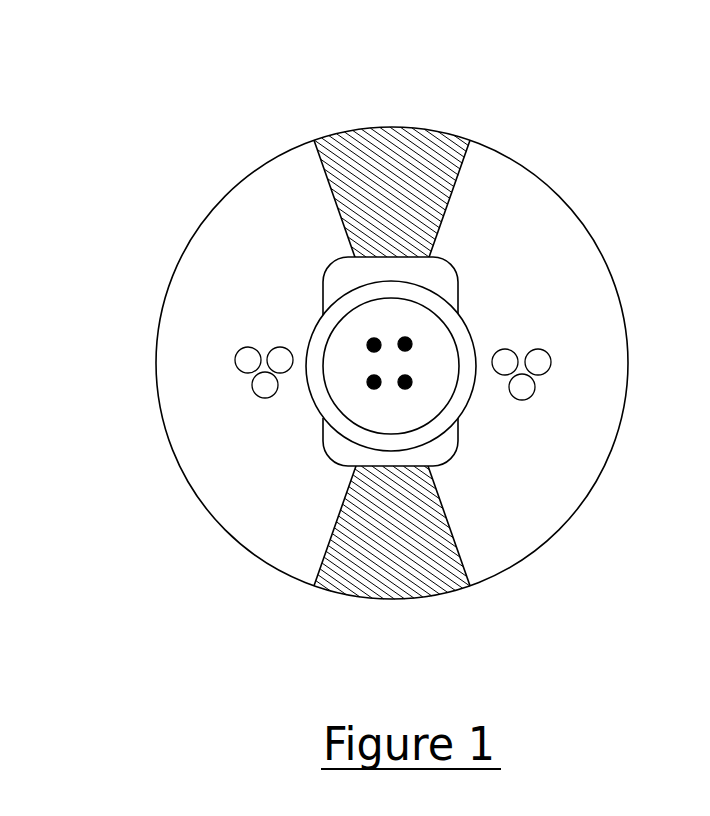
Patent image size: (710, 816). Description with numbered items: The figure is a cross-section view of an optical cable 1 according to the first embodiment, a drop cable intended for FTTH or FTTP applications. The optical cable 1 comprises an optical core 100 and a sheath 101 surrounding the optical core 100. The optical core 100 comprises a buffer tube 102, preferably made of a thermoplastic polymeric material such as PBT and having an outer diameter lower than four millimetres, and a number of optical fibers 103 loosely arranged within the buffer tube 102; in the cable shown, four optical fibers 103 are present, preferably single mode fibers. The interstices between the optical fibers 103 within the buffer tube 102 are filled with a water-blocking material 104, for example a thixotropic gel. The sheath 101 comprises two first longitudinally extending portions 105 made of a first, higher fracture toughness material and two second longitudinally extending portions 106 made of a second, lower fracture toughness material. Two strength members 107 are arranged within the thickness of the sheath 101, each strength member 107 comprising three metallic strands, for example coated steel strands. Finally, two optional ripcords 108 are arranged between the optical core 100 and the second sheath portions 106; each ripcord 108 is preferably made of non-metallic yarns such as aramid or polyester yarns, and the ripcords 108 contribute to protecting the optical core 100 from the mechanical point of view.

The optical cable 1 is at (262, 88).
The optical core 100 is at (303, 310).
The sheath 101 is at (530, 158).
The buffer tube 102 is at (470, 323).
The optical fibers 103 is at (407, 383).
The water-blocking material 104 is at (342, 383).
The first longitudinally extending portions 105 is at (157, 333).
The second longitudinally extending portions 106 is at (412, 127).
The strength members 107 is at (238, 386).
The ripcords 108 is at (342, 258).